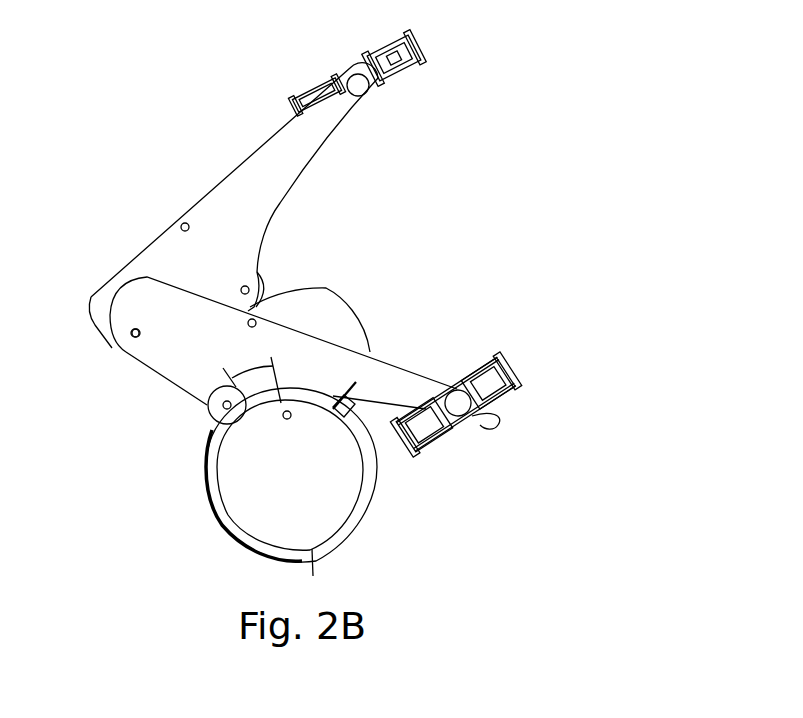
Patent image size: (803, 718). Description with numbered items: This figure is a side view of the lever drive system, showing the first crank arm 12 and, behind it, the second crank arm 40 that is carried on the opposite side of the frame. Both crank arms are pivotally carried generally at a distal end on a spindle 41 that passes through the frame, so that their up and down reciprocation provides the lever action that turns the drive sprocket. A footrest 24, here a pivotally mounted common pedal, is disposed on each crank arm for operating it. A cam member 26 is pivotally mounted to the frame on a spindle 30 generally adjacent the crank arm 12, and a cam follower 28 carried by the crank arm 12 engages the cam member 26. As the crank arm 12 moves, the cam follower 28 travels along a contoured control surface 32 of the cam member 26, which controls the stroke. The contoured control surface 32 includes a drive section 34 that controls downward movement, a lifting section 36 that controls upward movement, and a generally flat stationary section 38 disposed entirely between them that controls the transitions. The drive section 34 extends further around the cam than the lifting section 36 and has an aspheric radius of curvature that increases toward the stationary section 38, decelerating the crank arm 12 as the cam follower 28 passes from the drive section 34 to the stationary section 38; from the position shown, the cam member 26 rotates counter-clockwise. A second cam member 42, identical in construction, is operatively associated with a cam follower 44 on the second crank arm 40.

The crank arm 12 is at (388, 377).
The footrest 24 is at (415, 50).
The cam member 26 is at (270, 495).
The cam follower 28 is at (208, 413).
The spindle 30 is at (290, 421).
The contoured control surface 32 is at (342, 532).
The drive section 34 is at (216, 515).
The lifting section 36 is at (378, 490).
The stationary section 38 is at (251, 361).
The second crank arm 40 is at (278, 182).
The spindle 41 is at (137, 339).
The second cam member 42 is at (330, 302).
The cam follower 44 is at (264, 280).